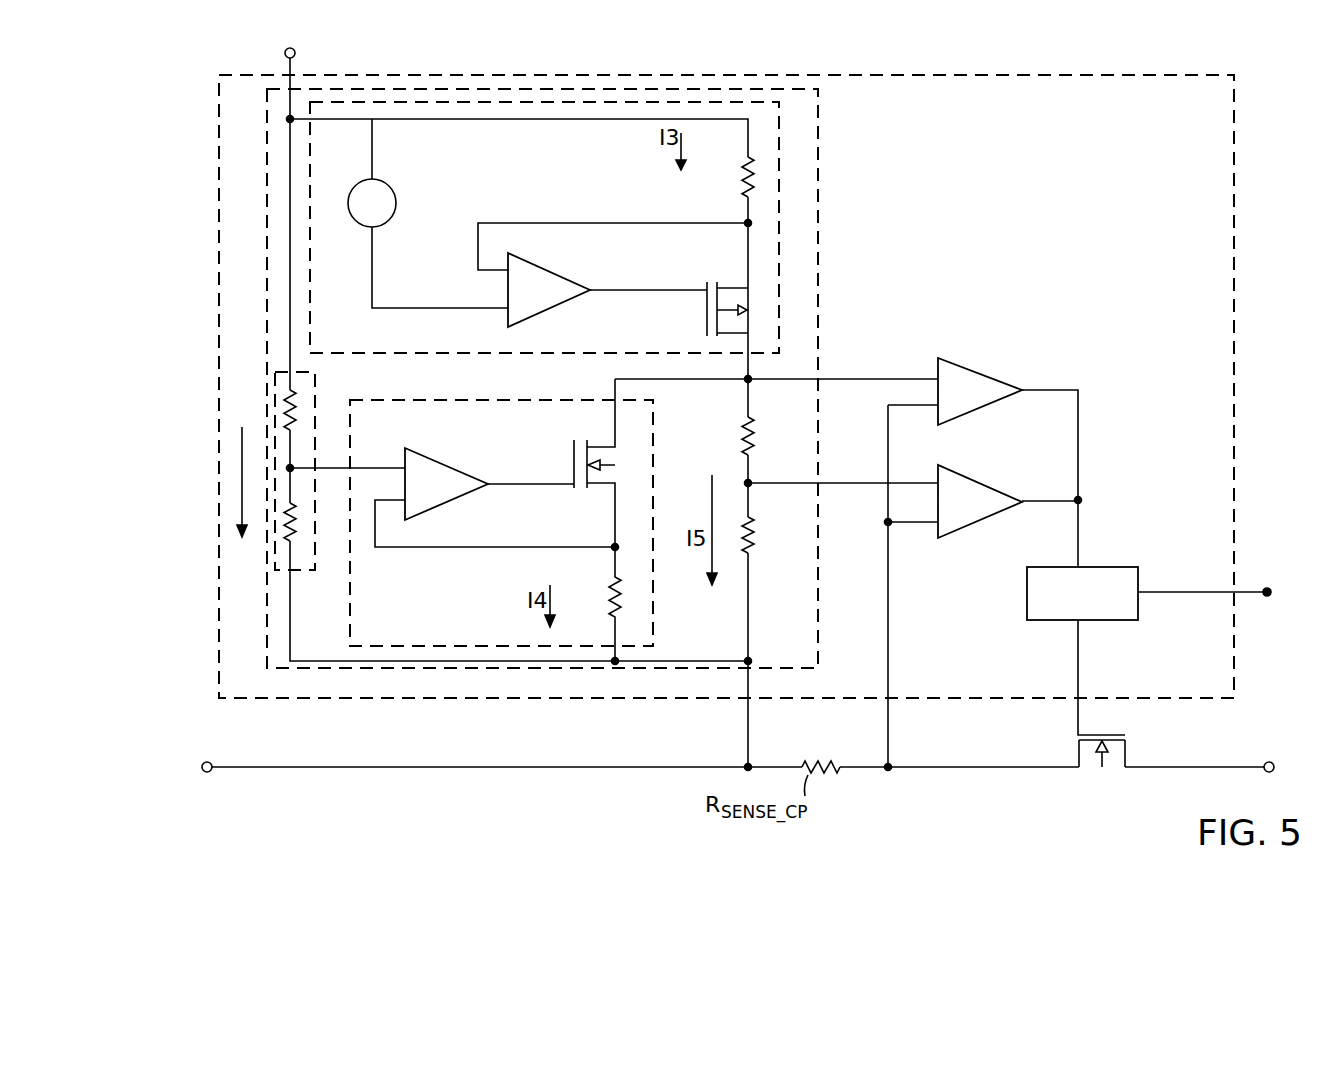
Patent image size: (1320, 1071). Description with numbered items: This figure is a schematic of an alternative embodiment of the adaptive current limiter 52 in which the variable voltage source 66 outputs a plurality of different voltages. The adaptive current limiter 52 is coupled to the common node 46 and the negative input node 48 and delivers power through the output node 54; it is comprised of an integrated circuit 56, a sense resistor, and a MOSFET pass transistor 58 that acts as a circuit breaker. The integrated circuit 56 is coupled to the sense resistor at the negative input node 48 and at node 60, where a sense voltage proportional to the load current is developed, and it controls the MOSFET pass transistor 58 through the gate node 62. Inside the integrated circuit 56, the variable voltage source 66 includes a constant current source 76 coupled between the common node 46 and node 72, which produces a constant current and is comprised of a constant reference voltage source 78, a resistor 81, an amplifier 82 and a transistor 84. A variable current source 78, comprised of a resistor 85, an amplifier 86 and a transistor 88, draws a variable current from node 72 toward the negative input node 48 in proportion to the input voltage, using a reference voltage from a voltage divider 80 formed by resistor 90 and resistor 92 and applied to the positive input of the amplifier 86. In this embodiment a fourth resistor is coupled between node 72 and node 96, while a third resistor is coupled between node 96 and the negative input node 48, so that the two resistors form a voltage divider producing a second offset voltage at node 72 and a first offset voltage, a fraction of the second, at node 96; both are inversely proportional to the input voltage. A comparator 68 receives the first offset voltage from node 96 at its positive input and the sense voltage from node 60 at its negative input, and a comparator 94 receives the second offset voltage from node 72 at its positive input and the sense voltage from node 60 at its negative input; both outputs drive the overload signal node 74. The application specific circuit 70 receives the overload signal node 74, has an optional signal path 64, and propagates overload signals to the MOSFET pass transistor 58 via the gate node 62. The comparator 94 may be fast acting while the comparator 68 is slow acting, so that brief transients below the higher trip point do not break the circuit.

The common node 46 is at (296, 54).
The negative VIN node 48 is at (202, 771).
The adaptive current limiter 52 is at (156, 110).
The VOUT node 54 is at (1273, 761).
The integrated circuit 56 is at (783, 73).
The MOSFET pass transistor 58 is at (1127, 745).
The node 60 is at (888, 772).
The gate node 62 is at (1077, 722).
The optional signal path 64 is at (1245, 591).
The variable voltage source 66 is at (450, 88).
The comparator 68 is at (985, 515).
The application specific circuit 70 is at (1139, 578).
The node 72 is at (746, 380).
The overload signal node 74 is at (1080, 529).
The constant current source 76 is at (573, 100).
The variable current source 78 is at (393, 192).
The voltage divider 80 is at (305, 572).
The resistor 81 is at (742, 172).
The amplifier 82 is at (570, 272).
The transistor 84 is at (705, 312).
The resistor 85 is at (612, 605).
The amplifier 86 is at (450, 462).
The transistor 88 is at (600, 485).
The resistor 90 is at (287, 402).
The resistor 92 is at (287, 530).
The comparator 94 is at (990, 398).
The node 96 is at (747, 482).